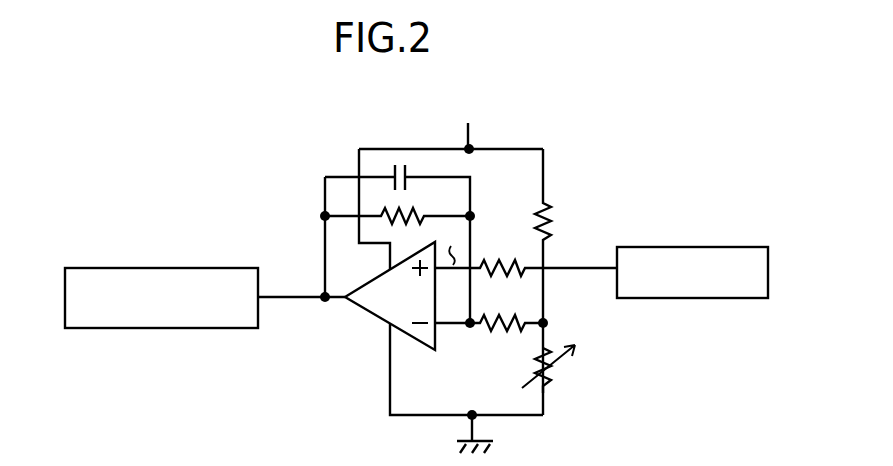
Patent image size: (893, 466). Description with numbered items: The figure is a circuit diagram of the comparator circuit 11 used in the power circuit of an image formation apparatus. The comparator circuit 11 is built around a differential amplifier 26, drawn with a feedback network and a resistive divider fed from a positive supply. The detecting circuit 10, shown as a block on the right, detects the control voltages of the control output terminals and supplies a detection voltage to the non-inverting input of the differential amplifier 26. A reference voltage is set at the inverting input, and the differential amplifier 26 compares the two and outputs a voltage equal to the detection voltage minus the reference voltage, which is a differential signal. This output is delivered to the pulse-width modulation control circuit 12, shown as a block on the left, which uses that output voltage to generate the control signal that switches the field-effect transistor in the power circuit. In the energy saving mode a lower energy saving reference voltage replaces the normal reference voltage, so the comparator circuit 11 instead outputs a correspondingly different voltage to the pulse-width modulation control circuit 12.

The detecting circuit 10 is at (674, 247).
The comparator circuit 11 is at (437, 265).
The pulse-width modulation control circuit 12 is at (233, 268).
The differential amplifier 26 is at (372, 314).